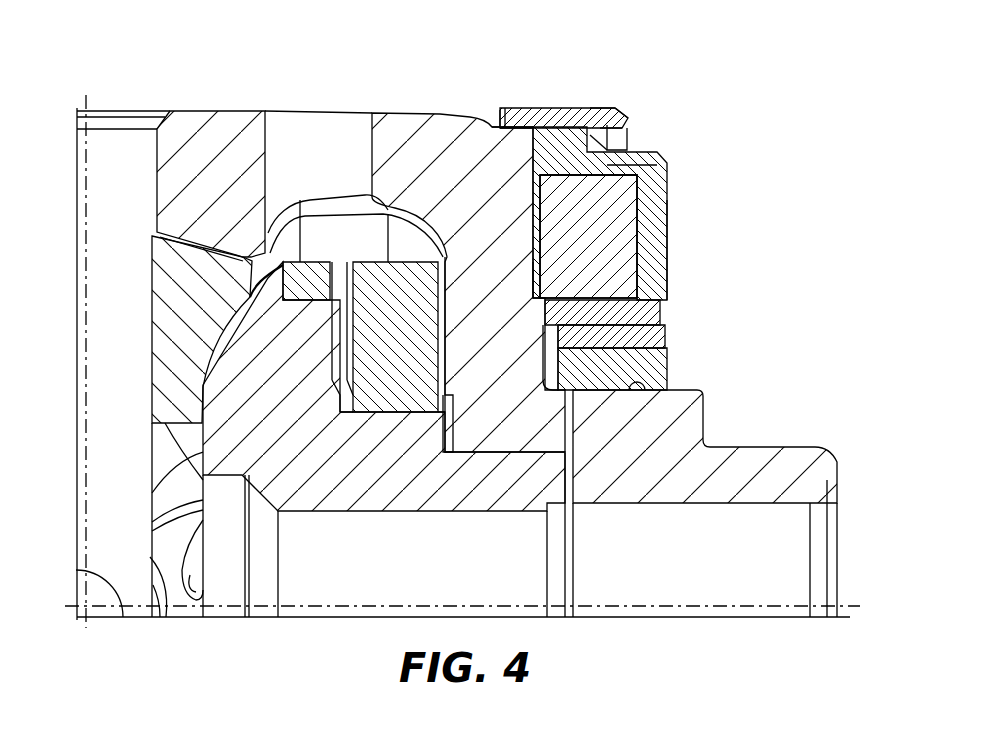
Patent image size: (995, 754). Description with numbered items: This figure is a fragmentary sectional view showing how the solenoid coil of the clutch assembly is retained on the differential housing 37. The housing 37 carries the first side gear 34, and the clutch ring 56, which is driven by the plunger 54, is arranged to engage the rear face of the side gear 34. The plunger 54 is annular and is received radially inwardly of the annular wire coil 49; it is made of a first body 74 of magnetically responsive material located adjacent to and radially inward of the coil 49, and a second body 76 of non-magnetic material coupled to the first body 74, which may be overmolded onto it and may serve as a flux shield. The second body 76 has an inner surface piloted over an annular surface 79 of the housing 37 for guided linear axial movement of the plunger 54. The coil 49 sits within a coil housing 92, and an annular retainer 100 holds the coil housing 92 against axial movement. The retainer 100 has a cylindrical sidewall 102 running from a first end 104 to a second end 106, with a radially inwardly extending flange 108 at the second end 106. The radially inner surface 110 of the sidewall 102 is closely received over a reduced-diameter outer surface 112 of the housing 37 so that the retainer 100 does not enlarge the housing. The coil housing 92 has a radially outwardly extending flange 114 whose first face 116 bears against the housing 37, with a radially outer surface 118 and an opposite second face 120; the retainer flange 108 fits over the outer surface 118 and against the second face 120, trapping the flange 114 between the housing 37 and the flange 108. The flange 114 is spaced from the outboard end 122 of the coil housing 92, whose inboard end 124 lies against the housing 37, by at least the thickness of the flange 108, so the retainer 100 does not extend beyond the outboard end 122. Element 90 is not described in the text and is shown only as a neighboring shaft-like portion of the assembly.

The first side gear 34 is at (477, 486).
The housing 37 is at (247, 130).
The wire coil 49 is at (622, 232).
The plunger 54 is at (657, 347).
The clutch ring 56 is at (383, 277).
The first body 74 is at (643, 332).
The second body 76 is at (660, 370).
The surface 79 is at (633, 377).
The shaft sleeve 90 is at (813, 446).
The coil housing 92 is at (652, 190).
The retainer 100 is at (613, 112).
The sidewall 102 is at (550, 108).
The first end 104 is at (500, 108).
The second end 106 is at (607, 128).
The flange 108 is at (618, 150).
The radially inner surface 110 is at (508, 126).
The outer surface 112 is at (533, 105).
The flange 114 is at (657, 162).
The first face 116 is at (583, 146).
The radially outer surface 118 is at (597, 124).
The second face 120 is at (622, 135).
The outboard end 122 is at (667, 258).
The inboard end 124 is at (533, 272).